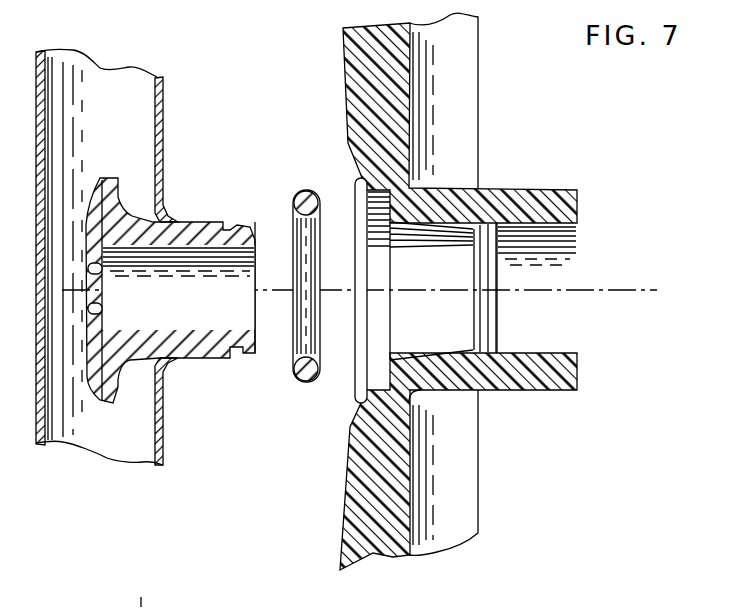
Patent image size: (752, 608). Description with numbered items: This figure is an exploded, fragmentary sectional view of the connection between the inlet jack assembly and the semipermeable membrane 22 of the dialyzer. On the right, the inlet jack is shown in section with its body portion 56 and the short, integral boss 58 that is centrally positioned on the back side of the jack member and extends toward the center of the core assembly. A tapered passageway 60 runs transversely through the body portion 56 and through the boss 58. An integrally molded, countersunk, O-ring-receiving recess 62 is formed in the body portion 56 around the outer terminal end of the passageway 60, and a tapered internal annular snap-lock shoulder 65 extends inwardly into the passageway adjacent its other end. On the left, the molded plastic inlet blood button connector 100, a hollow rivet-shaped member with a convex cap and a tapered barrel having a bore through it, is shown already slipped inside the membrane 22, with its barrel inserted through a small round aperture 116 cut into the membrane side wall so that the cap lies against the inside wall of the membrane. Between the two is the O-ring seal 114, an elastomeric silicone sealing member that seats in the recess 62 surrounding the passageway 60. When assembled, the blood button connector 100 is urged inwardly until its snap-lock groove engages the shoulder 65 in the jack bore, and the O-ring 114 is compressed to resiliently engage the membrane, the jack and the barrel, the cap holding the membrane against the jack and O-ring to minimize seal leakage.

The membrane 22 is at (162, 128).
The body portion 56 is at (409, 113).
The boss 58 is at (545, 190).
The tapered passageway 60 is at (560, 242).
The O-ring-receiving recess 62 is at (377, 377).
The snap-lock shoulder 65 is at (500, 337).
The inlet blood button connector 100 is at (170, 283).
The O-ring seal 114 is at (298, 381).
The aperture 116 is at (173, 357).